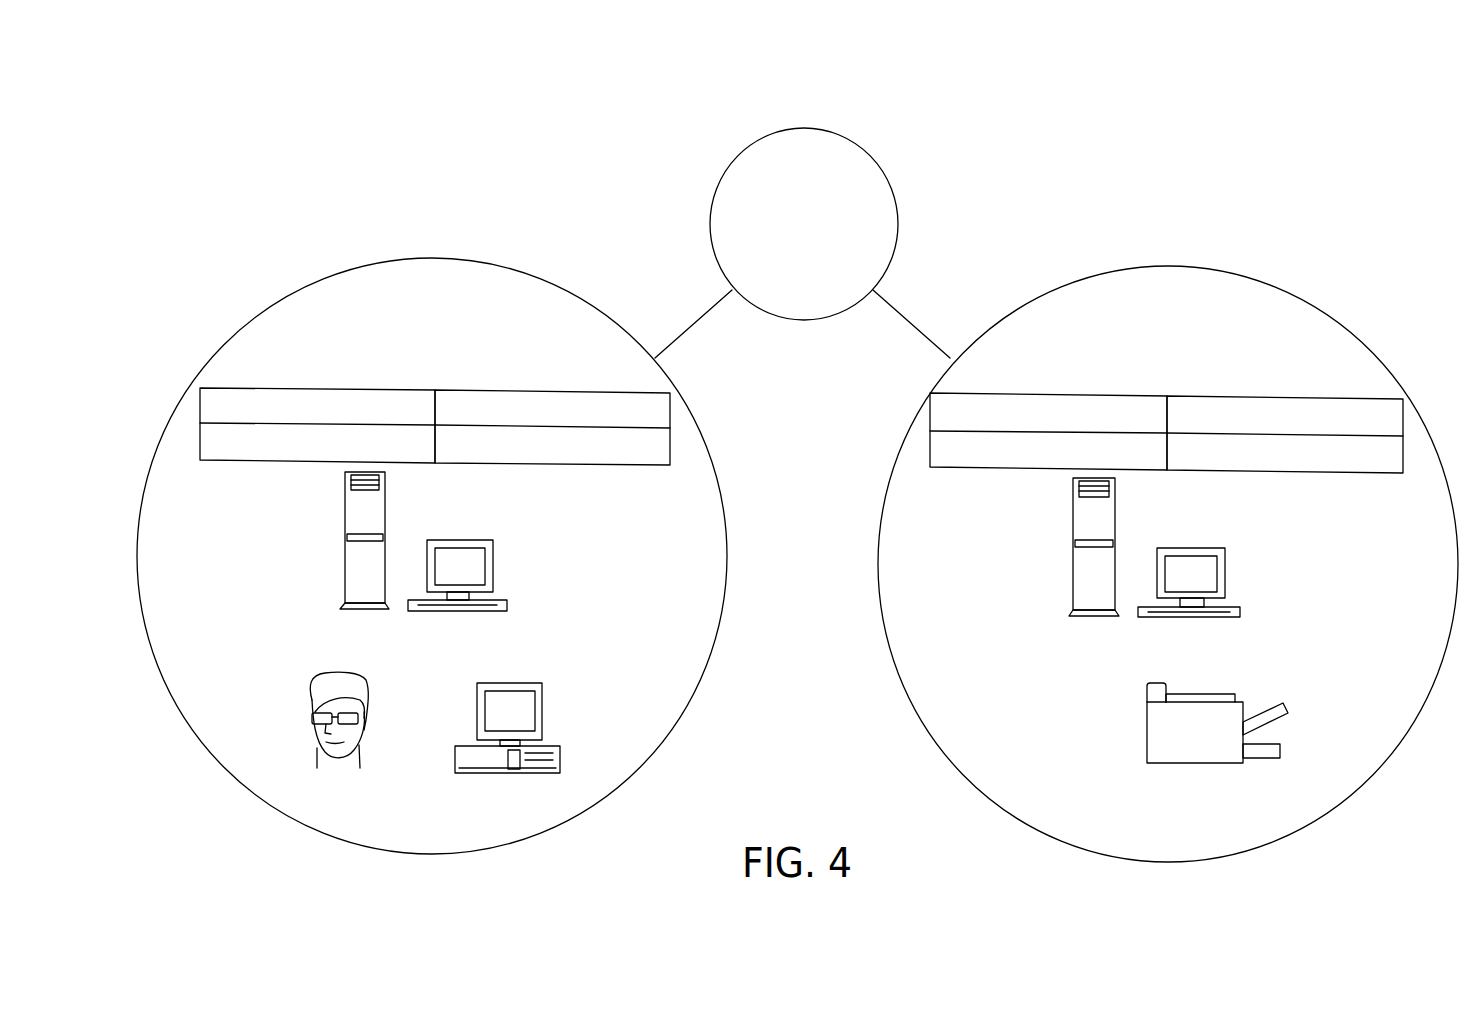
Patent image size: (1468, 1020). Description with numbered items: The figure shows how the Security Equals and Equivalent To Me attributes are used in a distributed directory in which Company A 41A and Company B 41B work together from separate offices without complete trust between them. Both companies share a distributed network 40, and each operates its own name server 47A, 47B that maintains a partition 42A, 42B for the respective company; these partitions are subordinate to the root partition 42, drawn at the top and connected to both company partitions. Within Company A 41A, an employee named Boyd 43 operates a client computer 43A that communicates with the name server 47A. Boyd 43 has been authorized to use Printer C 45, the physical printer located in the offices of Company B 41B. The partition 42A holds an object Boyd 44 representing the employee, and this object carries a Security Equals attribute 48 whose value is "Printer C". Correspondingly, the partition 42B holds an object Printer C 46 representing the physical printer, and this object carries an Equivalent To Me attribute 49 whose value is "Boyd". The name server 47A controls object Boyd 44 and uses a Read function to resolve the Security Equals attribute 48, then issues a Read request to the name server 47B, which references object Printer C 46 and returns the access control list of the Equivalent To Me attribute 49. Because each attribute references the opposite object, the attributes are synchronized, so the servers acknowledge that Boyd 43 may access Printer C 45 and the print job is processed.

The distributed network 40 is at (1112, 142).
The Company A 41A is at (305, 262).
The Company B 41B is at (1378, 303).
The root partition 42 is at (851, 140).
The partition 42A is at (418, 258).
The partition 42B is at (1223, 270).
The Boyd 43 is at (310, 702).
The client computer 43A is at (525, 683).
The object Boyd 44 is at (290, 462).
The Printer C 45 is at (1225, 692).
The object Printer C 46 is at (1027, 468).
The name server 47A is at (493, 562).
The name server 47B is at (1225, 572).
The Security Equals attribute 48 is at (525, 465).
The Equivalent To Me attribute 49 is at (1260, 470).